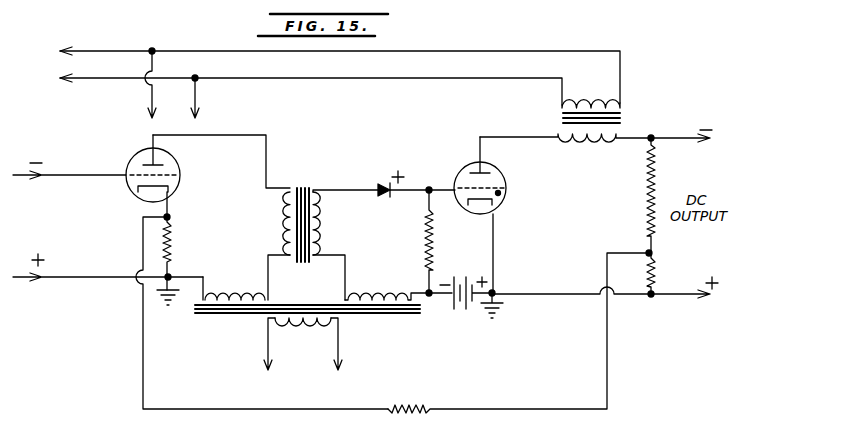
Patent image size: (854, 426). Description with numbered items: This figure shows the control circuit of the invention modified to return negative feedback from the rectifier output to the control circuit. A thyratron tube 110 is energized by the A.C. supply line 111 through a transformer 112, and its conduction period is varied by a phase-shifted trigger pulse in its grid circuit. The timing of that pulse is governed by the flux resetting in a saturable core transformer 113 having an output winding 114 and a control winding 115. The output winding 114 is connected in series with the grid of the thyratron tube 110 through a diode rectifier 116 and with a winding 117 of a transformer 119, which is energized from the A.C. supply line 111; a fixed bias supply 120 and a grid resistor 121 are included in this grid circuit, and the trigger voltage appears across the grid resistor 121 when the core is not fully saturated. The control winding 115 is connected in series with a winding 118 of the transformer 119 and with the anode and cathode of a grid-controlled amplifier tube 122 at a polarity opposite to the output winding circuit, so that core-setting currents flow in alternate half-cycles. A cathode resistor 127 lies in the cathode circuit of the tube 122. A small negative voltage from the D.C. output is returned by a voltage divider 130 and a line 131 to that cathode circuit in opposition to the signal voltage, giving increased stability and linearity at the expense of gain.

The thyratron tube 110 is at (507, 178).
The A.C. supply line 111 is at (62, 40).
The transformer 112 is at (621, 118).
The saturable core transformer 113 is at (302, 186).
The output winding 114 is at (328, 233).
The control winding 115 is at (280, 233).
The diode rectifier 116 is at (378, 186).
The winding 117 is at (397, 284).
The winding 118 is at (246, 280).
The transformer 119 is at (412, 313).
The fixed bias supply 120 is at (457, 309).
The grid resistor 121 is at (432, 243).
The grid-controlled amplifier tube 122 is at (181, 170).
The cathode resistor 127 is at (172, 244).
The voltage divider 130 is at (649, 221).
The line 131 is at (554, 407).